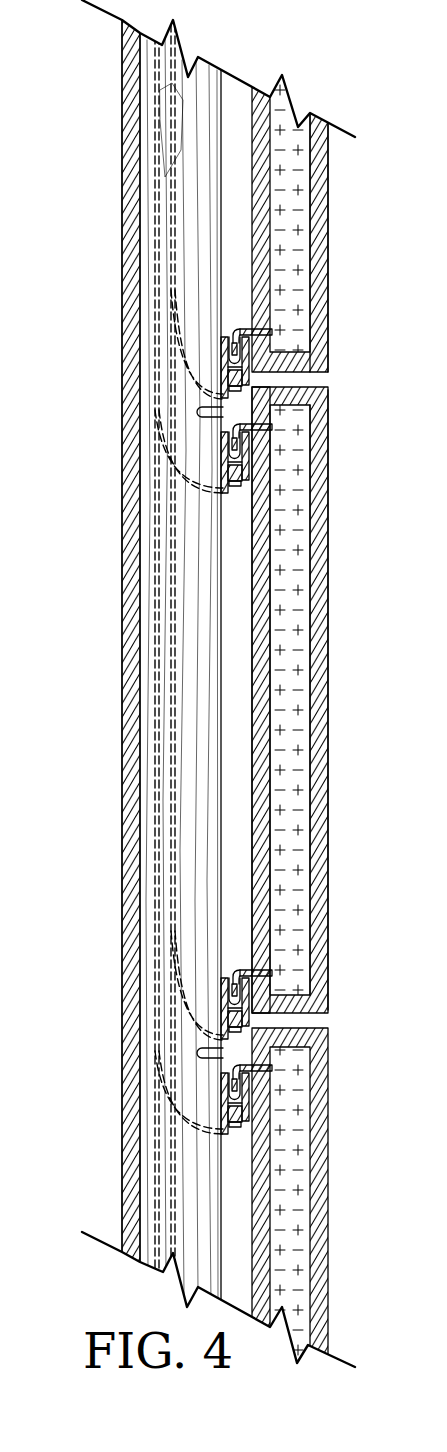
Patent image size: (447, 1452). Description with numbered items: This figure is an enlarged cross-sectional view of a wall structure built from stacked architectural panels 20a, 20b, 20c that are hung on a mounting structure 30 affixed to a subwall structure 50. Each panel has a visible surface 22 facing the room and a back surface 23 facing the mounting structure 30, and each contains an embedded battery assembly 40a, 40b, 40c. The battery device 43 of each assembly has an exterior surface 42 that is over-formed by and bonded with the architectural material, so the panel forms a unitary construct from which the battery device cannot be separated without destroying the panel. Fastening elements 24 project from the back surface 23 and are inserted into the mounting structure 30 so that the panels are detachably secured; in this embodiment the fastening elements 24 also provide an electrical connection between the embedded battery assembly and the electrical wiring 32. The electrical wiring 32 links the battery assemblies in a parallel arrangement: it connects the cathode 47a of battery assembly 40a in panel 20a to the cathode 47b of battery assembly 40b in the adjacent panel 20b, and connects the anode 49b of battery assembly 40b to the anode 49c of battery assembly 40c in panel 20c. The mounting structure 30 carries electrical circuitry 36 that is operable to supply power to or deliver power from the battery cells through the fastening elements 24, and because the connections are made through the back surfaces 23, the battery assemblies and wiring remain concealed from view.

The panel 20a is at (347, 186).
The panel 20b is at (245, 700).
The panel 20c is at (347, 1240).
The visible surface 22 is at (329, 462).
The back surface 23 is at (250, 573).
The fastening elements 24 is at (248, 330).
The mounting structure 30 is at (222, 434).
The electrical wiring 32 is at (170, 940).
The electrical circuitry 36 is at (150, 772).
The battery assembly 40a is at (290, 308).
The battery assembly 40b is at (288, 597).
The battery assembly 40c is at (288, 1203).
The exterior surface 42 is at (322, 689).
The battery device 43 is at (323, 192).
The cathode 47a is at (232, 373).
The cathode 47b is at (232, 1014).
The anode 49b is at (232, 464).
The anode 49c is at (232, 1105).
The subwall structure 50 is at (186, 174).